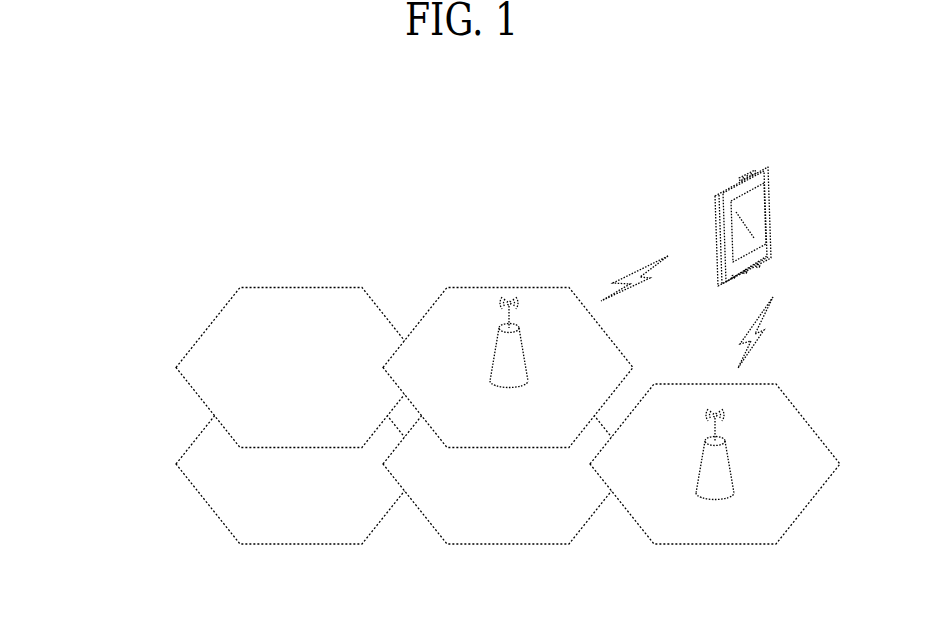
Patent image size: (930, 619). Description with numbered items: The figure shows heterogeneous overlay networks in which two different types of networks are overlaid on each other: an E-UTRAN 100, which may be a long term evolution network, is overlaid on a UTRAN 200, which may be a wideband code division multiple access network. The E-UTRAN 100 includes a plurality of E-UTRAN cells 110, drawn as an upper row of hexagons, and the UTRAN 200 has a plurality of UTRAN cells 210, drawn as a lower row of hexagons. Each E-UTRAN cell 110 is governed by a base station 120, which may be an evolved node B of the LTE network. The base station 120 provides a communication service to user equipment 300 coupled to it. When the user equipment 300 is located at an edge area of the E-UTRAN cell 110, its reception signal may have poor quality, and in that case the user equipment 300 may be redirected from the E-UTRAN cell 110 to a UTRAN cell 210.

The E-UTRAN 100 is at (227, 368).
The E-UTRAN cell 110 is at (533, 288).
The base station 120 is at (525, 349).
The UTRAN 200 is at (334, 464).
The UTRAN cell 210 is at (810, 423).
The user equipment 300 is at (771, 188).